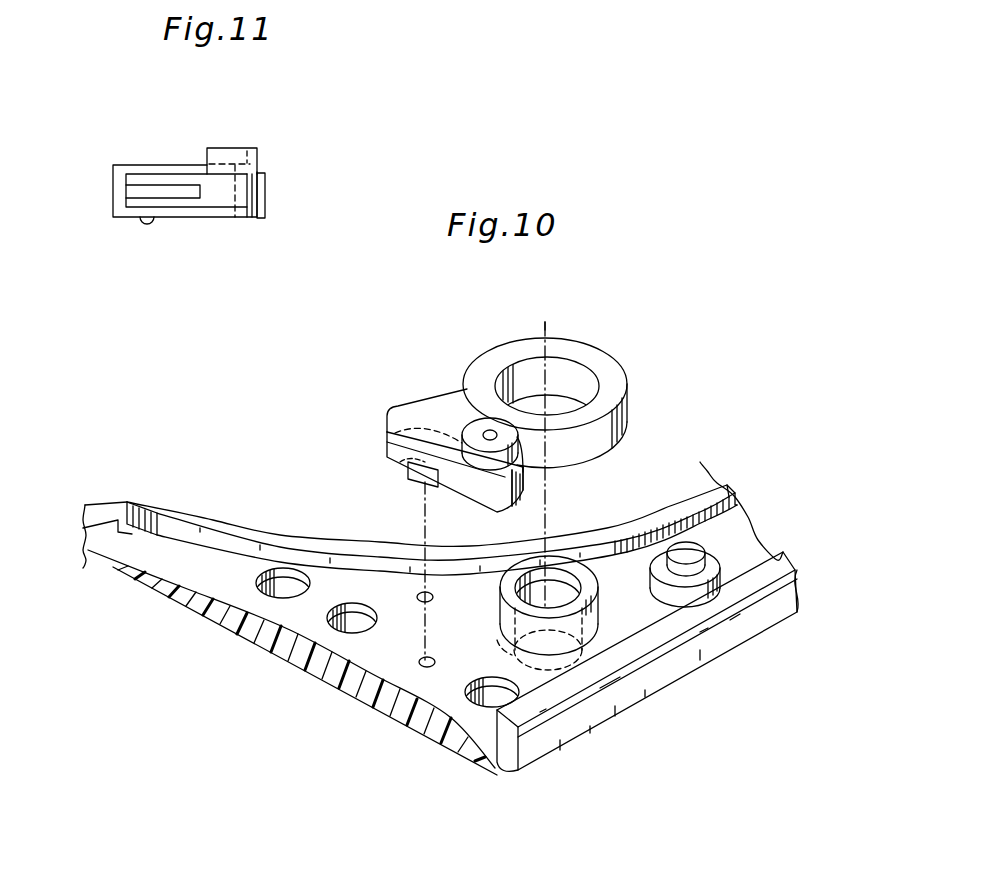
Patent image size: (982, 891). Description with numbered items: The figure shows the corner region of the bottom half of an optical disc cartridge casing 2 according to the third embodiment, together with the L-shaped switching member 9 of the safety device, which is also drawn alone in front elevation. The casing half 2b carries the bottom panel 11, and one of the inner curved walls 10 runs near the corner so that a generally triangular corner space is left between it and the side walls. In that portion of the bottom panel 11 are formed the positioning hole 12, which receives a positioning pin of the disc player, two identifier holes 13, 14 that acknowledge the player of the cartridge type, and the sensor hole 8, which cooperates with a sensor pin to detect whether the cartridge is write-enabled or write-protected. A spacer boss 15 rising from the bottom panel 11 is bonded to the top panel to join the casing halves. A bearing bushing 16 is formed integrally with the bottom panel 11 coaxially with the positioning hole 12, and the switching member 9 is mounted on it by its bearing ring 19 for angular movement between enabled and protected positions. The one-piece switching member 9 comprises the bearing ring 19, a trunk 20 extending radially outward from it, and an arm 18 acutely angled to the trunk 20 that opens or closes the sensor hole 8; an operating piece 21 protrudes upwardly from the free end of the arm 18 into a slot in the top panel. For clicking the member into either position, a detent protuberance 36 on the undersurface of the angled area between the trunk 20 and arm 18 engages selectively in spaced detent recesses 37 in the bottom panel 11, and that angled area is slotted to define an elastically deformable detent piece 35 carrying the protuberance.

In FIG. 10, the casing 2 is at (246, 645).
In FIG. 10, the casing half 2b is at (625, 690).
In FIG. 10, the sensor hole 8 is at (470, 698).
In FIG. 11, the switching member 9 is at (268, 148).
In FIG. 10, the switching member 9 is at (609, 336).
In FIG. 10, the inner curved walls 10 is at (667, 510).
In FIG. 10, the bottom panel 11 is at (362, 706).
In FIG. 10, the positioning hole 12 is at (521, 658).
In FIG. 10, the identifier hole 13 is at (366, 592).
In FIG. 10, the identifier hole 14 is at (287, 578).
In FIG. 10, the spacer boss 15 is at (702, 548).
In FIG. 10, the bearing bushing 16 is at (598, 580).
In FIG. 11, the arm 18 is at (235, 212).
In FIG. 10, the arm 18 is at (470, 497).
In FIG. 11, the bearing ring 19 is at (127, 165).
In FIG. 10, the bearing ring 19 is at (630, 423).
In FIG. 10, the trunk 20 is at (448, 400).
In FIG. 11, the operating piece 21 is at (231, 157).
In FIG. 10, the operating piece 21 is at (518, 437).
In FIG. 11, the detent piece 35 is at (130, 206).
In FIG. 10, the detent piece 35 is at (400, 462).
In FIG. 11, the detent protuberance 36 is at (148, 226).
In FIG. 10, the detent protuberance 36 is at (400, 466).
In FIG. 10, the detent recesses 37 is at (433, 658).